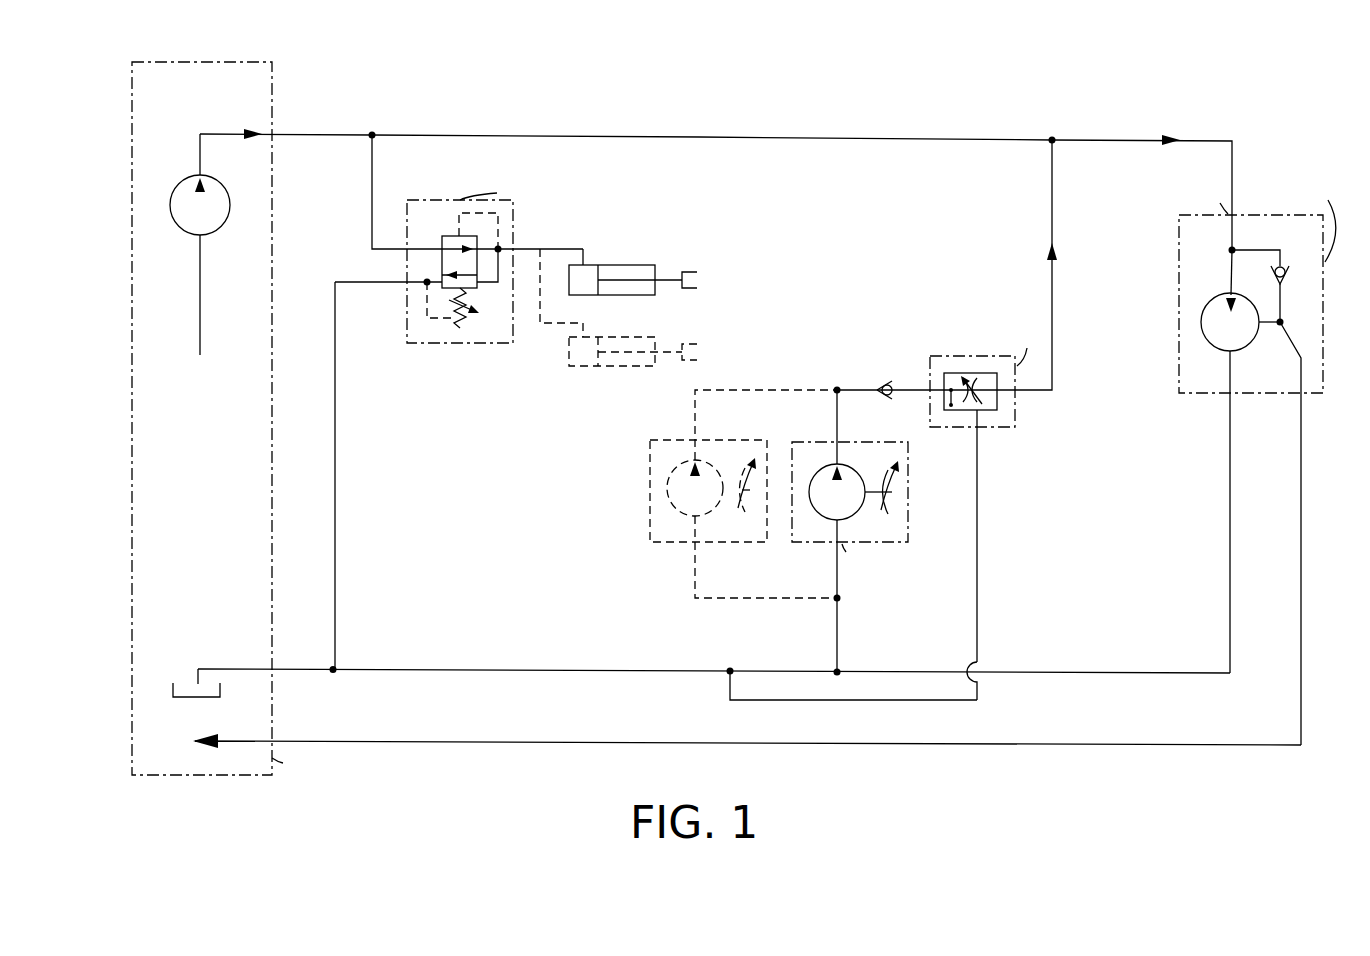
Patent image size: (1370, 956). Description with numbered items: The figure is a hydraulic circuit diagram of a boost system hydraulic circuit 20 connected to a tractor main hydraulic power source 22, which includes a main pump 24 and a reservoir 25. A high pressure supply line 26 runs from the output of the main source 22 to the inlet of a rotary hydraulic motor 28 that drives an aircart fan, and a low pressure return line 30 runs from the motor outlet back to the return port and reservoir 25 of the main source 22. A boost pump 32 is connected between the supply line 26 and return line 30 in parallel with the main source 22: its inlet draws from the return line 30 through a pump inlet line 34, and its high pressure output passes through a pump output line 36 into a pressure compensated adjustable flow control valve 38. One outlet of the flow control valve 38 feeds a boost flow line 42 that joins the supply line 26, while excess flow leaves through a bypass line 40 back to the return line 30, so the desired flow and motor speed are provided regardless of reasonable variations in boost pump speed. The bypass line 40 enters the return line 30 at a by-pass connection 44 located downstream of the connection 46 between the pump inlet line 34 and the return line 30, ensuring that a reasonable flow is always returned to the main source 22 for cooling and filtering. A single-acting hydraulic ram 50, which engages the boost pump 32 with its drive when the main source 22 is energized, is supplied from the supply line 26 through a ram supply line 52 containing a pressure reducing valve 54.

The boost system hydraulic circuit 20 is at (762, 62).
The tractor main hydraulic power source 22 is at (322, 433).
The main pump 24 is at (230, 205).
The reservoir 25 is at (200, 697).
The high pressure supply line 26 is at (625, 136).
The rotary hydraulic motor 28 is at (1210, 405).
The low pressure return line 30 is at (1000, 748).
The boost pump 32 is at (650, 528).
The pump inlet line 34 is at (836, 636).
The pump output line 36 is at (840, 398).
The pressure compensated adjustable flow control valve 38 is at (1025, 422).
The bypass line 40 is at (978, 572).
The boost flow line 42 is at (1054, 292).
The by-pass connection 44 is at (729, 668).
The connection 46 is at (841, 670).
The single-acting hydraulic ram 50 is at (620, 255).
The ram supply line 52 is at (372, 174).
The pressure reducing valve 54 is at (528, 219).